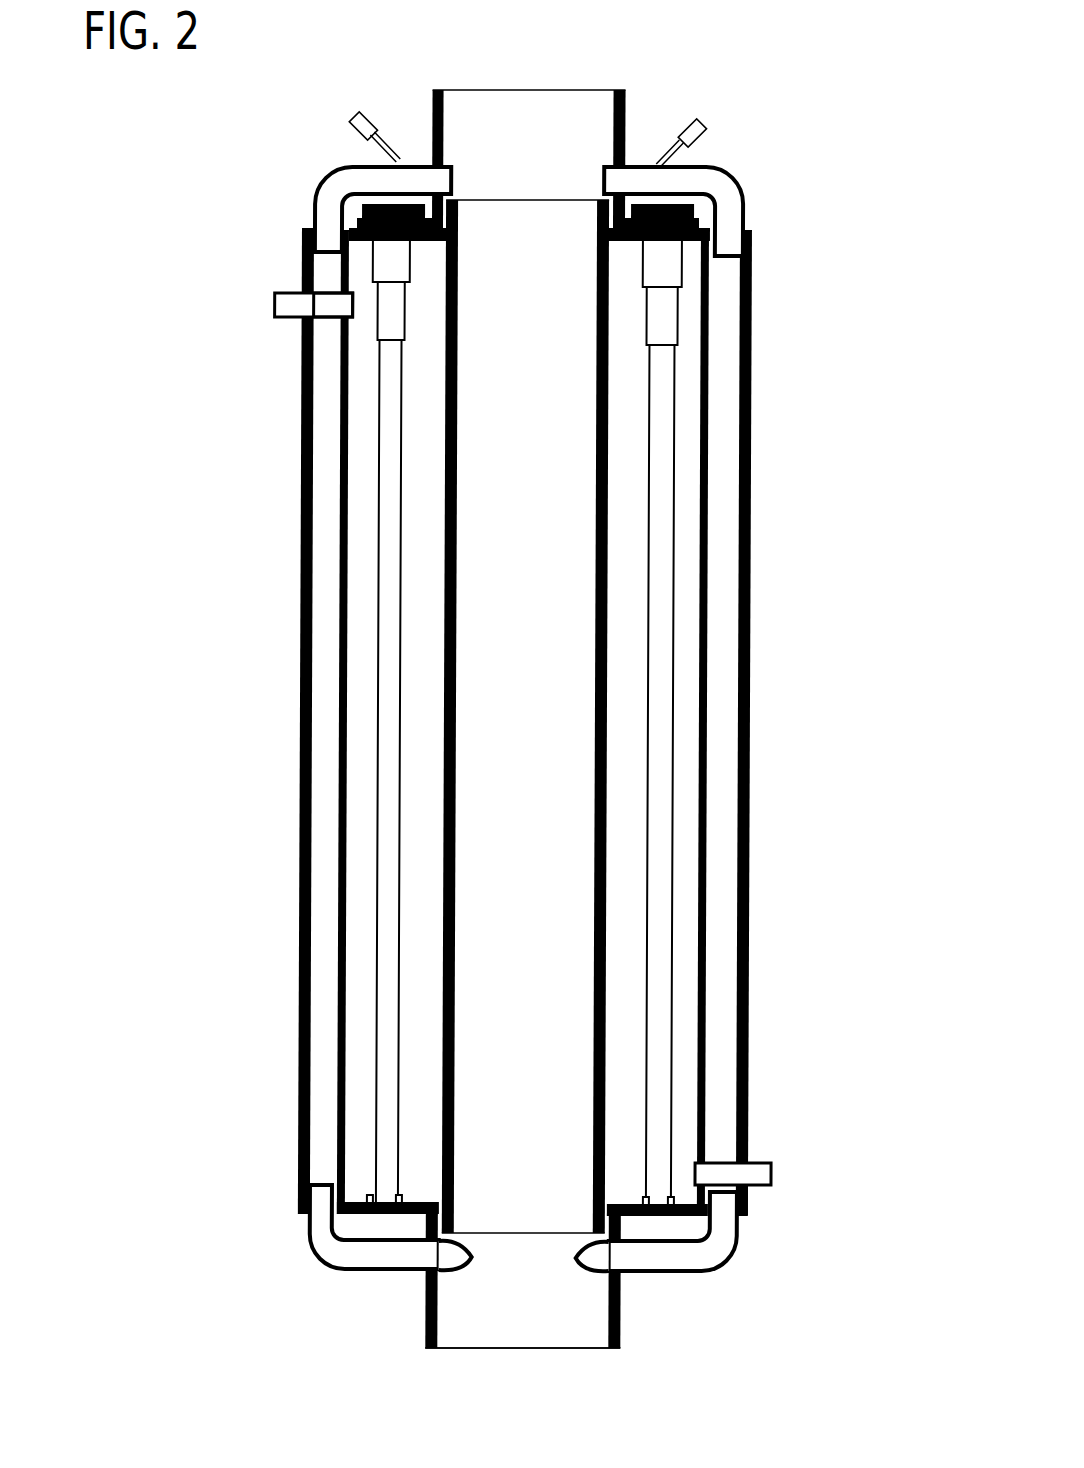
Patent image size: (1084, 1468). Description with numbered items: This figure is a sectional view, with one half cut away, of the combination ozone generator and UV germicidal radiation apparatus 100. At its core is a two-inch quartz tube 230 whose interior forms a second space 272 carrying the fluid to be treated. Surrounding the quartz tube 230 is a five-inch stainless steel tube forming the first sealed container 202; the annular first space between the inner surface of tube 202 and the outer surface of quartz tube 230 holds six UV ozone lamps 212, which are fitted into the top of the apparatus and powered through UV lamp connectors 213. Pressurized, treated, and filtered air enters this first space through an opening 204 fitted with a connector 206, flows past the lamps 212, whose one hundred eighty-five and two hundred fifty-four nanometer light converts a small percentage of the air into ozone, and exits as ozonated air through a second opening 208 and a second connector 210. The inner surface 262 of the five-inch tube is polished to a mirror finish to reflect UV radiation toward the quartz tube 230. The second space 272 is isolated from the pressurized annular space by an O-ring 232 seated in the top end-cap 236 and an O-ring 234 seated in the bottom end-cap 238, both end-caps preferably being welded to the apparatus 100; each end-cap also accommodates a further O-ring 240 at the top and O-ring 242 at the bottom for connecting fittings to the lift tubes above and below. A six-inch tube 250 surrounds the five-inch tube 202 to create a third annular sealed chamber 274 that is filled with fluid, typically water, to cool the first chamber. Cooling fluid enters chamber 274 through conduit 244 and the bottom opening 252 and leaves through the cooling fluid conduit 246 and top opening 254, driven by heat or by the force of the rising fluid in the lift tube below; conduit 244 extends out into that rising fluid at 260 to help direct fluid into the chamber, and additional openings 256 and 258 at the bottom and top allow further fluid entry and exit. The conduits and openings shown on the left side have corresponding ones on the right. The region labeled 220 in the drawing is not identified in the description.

The combination ozone generator and UV germicidal radiation apparatus 100 is at (183, 134).
The first sealed container 202 is at (345, 433).
The opening 204 is at (343, 318).
The connector 206 is at (276, 303).
The second opening 208 is at (700, 1163).
The second connector 210 is at (774, 1174).
The UV ozone lamp 212 is at (368, 200).
The UV lamp connector 213 is at (362, 117).
The annular flow channel 220 is at (367, 565).
The quartz tube 230 is at (598, 577).
The O-ring 232 is at (630, 233).
The O-ring 234 is at (700, 1280).
The top end-cap 236 is at (627, 143).
The bottom end-cap 238 is at (622, 1283).
The O-ring 240 is at (618, 92).
The O-ring 242 is at (621, 1349).
The conduit 244 is at (318, 1262).
The cooling fluid conduit 246 is at (313, 187).
The tube 250 is at (303, 598).
The opening 252 is at (312, 1213).
The opening 254 is at (300, 234).
The opening 256 is at (442, 1272).
The opening 258 is at (432, 162).
The extension of conduit into rising fluid 260 is at (432, 1312).
The inner surface 262 is at (685, 997).
The second space 272 is at (545, 742).
The third sealed chamber 274 is at (750, 873).